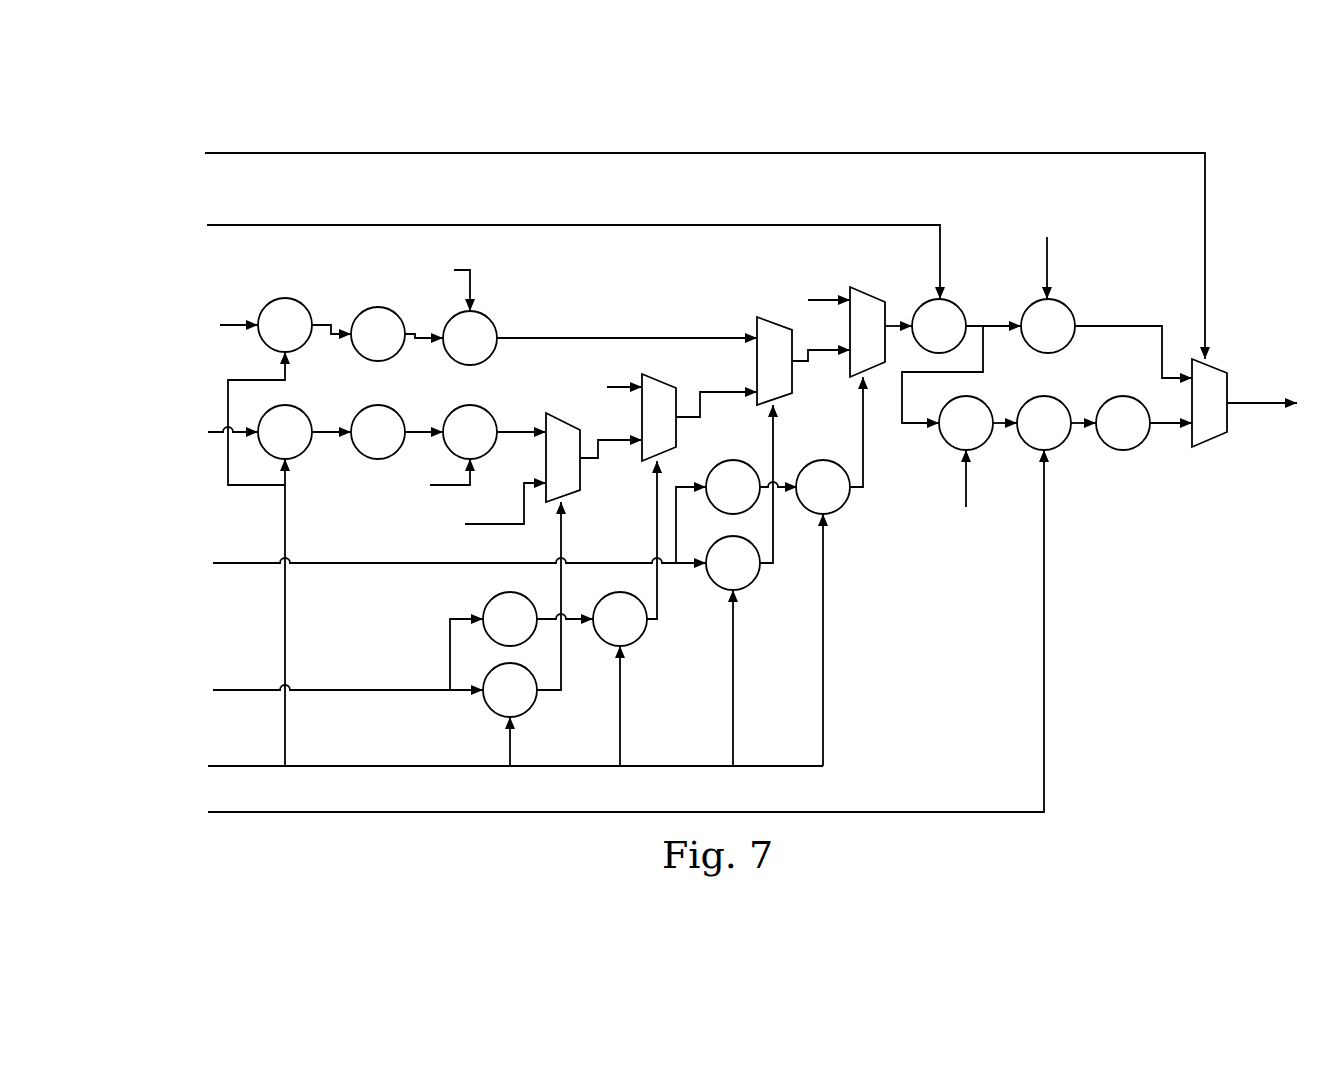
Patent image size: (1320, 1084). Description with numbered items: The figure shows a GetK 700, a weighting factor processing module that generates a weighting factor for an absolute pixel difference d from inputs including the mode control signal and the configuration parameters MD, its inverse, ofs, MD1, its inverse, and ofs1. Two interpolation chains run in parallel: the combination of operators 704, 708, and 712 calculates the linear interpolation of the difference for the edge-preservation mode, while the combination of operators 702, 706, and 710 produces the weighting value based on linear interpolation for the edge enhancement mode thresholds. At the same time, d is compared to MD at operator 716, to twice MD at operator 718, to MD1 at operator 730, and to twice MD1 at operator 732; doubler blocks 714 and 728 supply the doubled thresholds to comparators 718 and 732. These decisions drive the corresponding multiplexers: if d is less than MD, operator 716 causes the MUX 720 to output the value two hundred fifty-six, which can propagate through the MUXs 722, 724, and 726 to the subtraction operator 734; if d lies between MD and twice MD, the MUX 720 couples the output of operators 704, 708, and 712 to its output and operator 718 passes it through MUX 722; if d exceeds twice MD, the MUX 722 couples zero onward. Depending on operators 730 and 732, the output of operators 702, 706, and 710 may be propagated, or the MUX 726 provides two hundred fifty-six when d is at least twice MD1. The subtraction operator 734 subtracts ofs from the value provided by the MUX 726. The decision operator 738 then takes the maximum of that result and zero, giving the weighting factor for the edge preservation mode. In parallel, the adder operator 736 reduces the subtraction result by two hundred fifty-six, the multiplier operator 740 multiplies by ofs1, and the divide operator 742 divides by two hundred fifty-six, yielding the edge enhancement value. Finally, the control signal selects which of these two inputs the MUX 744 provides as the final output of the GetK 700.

The GetK 700 is at (1040, 94).
The operator 702 is at (285, 297).
The operator 704 is at (304, 412).
The operator 706 is at (376, 307).
The operator 708 is at (397, 412).
The operator 710 is at (489, 320).
The operator 712 is at (489, 412).
The doubler 714 is at (488, 603).
The decision operator 716 is at (527, 714).
The decision operator 718 is at (638, 637).
The MUX 720 is at (580, 492).
The MUX 722 is at (658, 376).
The MUX 724 is at (789, 395).
The MUX 726 is at (873, 291).
The doubler 728 is at (727, 460).
The decision operator 730 is at (752, 582).
The decision operator 732 is at (842, 506).
The subtraction operator 734 is at (957, 307).
The adder operator 736 is at (985, 442).
The decision operator 738 is at (1065, 307).
The multiplier operator 740 is at (1063, 442).
The divide operator 742 is at (1142, 444).
The MUX 744 is at (1218, 445).